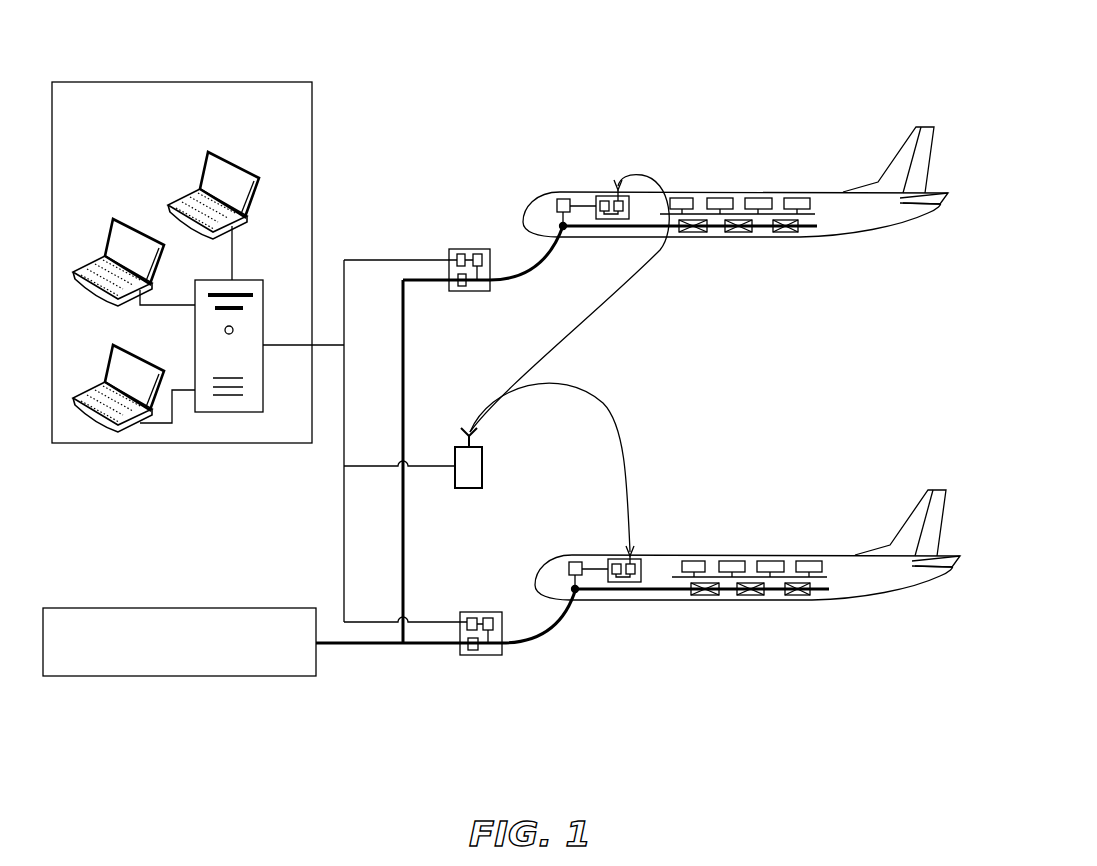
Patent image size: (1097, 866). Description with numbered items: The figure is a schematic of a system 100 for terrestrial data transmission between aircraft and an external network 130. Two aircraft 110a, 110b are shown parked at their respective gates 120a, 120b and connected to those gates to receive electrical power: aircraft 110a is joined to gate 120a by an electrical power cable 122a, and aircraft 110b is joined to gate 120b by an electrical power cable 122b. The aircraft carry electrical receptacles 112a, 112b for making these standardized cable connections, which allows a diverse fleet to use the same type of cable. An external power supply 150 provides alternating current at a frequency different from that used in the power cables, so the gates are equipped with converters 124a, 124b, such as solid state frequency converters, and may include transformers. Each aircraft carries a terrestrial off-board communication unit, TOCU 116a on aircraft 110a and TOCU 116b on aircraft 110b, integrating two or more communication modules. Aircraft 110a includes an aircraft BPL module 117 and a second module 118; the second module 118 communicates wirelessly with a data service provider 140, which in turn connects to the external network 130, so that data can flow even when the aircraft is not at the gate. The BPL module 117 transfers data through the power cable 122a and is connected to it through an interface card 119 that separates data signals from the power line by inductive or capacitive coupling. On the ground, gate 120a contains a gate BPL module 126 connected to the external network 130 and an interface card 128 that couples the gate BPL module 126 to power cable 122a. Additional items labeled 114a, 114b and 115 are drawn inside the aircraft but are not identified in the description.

The system 100 is at (888, 70).
The aircraft 110a is at (716, 179).
The aircraft 110b is at (747, 561).
The electrical receptacle 112a is at (566, 230).
The electrical receptacle 112b is at (618, 643).
The first aircraft power distribution line with units 114a is at (697, 230).
The second aircraft power distribution line with units 114b is at (702, 641).
The onboard electronic devices 115 is at (688, 197).
The terrestrial off-board communication unit 116a is at (626, 119).
The terrestrial off-board communication unit 116b is at (591, 502).
The aircraft BPL module 117 is at (605, 196).
The second module 118 is at (627, 195).
The interface card 119 is at (557, 199).
The gate 120a is at (443, 270).
The gate 120b is at (468, 694).
The electrical power cable 122a is at (530, 268).
The electrical power cable 122b is at (557, 632).
The converter 124a is at (460, 293).
The converter 124b is at (473, 657).
The gate BPL module 126 is at (453, 252).
The interface card 128 is at (473, 252).
The external network 130 is at (182, 262).
The data service provider 140 is at (470, 490).
The external power supply 150 is at (179, 642).